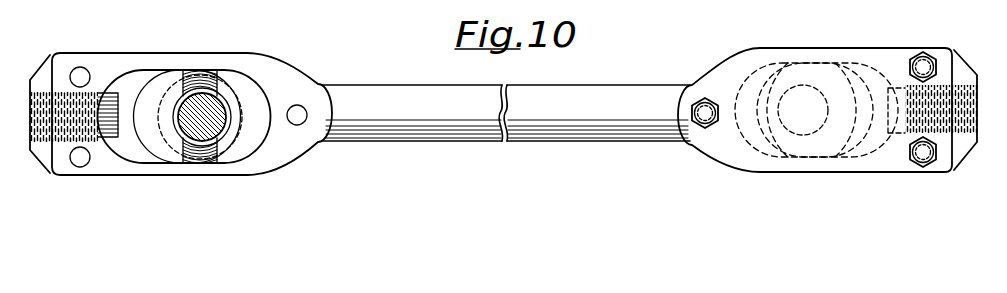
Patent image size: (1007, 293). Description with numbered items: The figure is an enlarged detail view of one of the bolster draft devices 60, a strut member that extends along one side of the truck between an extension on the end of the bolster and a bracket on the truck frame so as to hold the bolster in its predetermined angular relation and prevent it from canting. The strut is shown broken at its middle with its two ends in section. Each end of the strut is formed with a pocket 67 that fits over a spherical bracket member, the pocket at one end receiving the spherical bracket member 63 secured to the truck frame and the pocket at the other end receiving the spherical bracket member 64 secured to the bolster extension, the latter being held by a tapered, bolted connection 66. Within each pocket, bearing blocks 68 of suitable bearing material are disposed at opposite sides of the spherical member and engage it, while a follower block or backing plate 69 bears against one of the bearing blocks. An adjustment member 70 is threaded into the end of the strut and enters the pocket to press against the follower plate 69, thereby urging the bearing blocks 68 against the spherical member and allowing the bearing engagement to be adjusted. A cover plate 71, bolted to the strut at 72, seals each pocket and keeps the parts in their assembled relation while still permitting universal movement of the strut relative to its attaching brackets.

The bolster draft device 60 is at (537, 141).
The spherical bracket member 63 is at (196, 100).
The spherical bracket member 64 is at (805, 72).
The tapered bolted connection 66 is at (827, 157).
The pocket 67 is at (133, 80).
The bearing block 68 is at (233, 152).
The follower block or backing plate 69 is at (135, 150).
The adjustment member 70 is at (110, 103).
The cover plate 71 is at (737, 70).
The bolt 72 is at (925, 65).